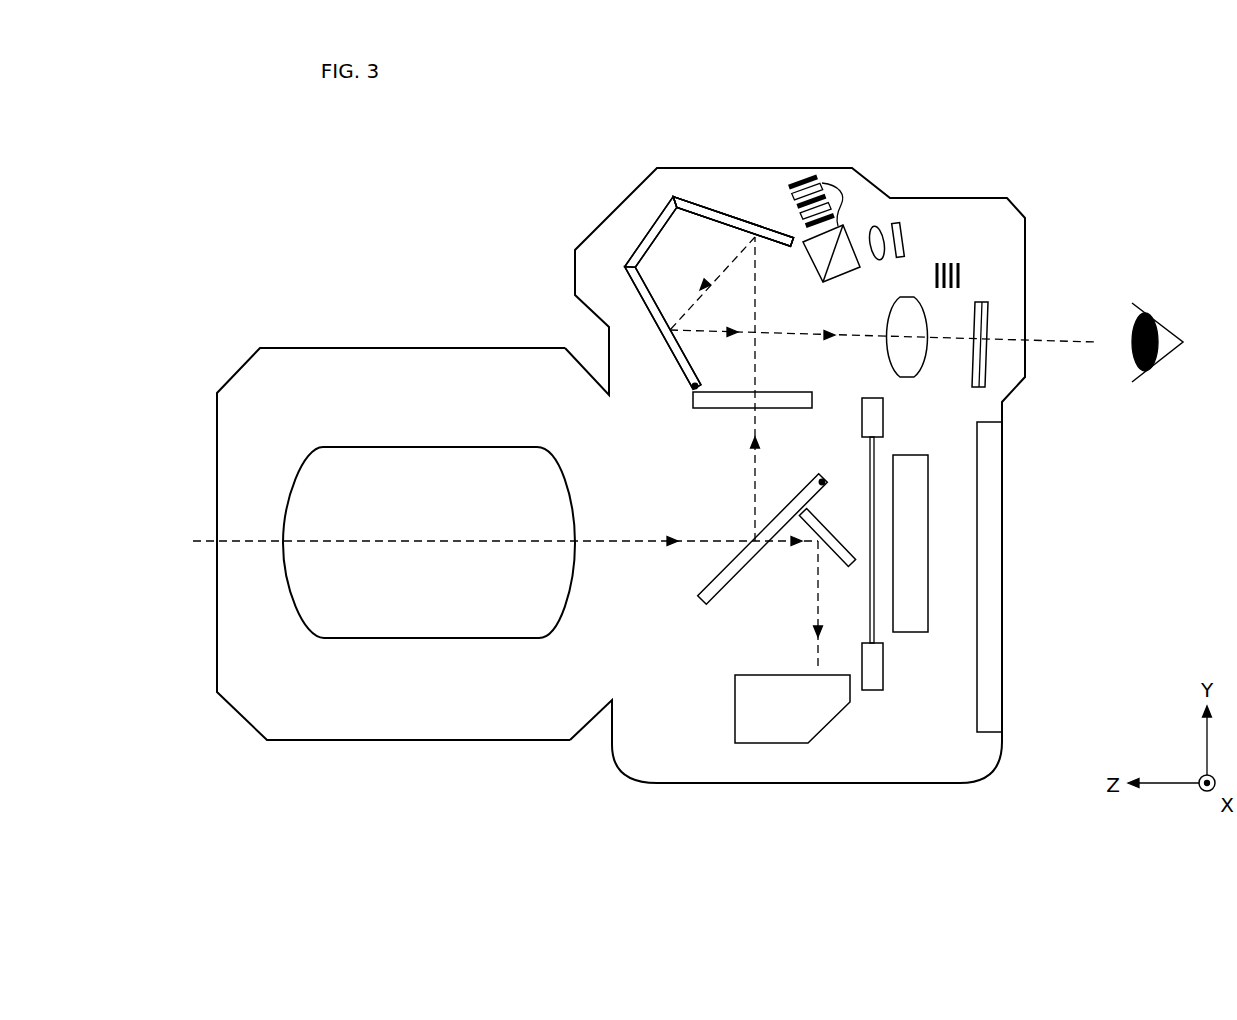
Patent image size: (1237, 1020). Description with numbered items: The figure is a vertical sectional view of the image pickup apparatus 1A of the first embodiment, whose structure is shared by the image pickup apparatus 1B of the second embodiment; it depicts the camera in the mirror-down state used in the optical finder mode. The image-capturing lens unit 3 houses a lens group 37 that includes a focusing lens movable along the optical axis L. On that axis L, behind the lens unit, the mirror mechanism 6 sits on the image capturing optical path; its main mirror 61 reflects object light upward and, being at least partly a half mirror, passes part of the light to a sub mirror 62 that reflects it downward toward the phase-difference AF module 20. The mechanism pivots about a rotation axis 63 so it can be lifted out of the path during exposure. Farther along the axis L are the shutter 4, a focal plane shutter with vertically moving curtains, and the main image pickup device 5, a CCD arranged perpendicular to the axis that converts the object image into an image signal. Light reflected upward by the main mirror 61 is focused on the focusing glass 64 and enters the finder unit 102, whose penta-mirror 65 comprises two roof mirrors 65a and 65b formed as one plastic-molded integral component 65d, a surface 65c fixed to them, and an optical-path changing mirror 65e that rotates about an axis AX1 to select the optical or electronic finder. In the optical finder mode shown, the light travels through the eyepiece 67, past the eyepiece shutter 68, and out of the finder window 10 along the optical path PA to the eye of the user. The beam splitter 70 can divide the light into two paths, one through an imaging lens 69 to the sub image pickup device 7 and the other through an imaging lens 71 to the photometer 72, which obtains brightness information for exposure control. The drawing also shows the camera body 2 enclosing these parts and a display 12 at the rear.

The image pickup apparatus 1A is at (300, 208).
The image pickup apparatus 1B is at (344, 208).
The camera body 2 is at (873, 783).
The image-capturing lens unit 3 is at (417, 750).
The shutter 4 is at (871, 690).
The main image pickup device 5 is at (913, 455).
The mirror mechanism 6 is at (694, 625).
The sub image pickup device 7 is at (872, 192).
The finder window 10 is at (989, 318).
The display 12 is at (1003, 578).
The phase-difference AF module 20 is at (771, 743).
The lens group 37 is at (425, 447).
The main mirror 61 is at (703, 574).
The sub mirror 62 is at (828, 528).
The rotation axis 63 is at (818, 478).
The focusing glass 64 is at (717, 409).
The penta-mirror 65 is at (677, 187).
The roof mirror 65a is at (729, 218).
The roof mirror 65b is at (733, 222).
The surface 65c is at (646, 228).
The integral component 65d is at (707, 210).
The optical-path changing mirror 65e is at (643, 297).
The eyepiece 67 is at (889, 315).
The eyepiece shutter 68 is at (962, 275).
The imaging lens 69 is at (840, 197).
The beam splitter 70 is at (858, 237).
The imaging lens 71 is at (877, 226).
The photometer 72 is at (903, 237).
The finder unit 102 is at (762, 212).
The axis AX1 is at (694, 389).
The optical path PA is at (1078, 345).
The optical axis L is at (196, 541).